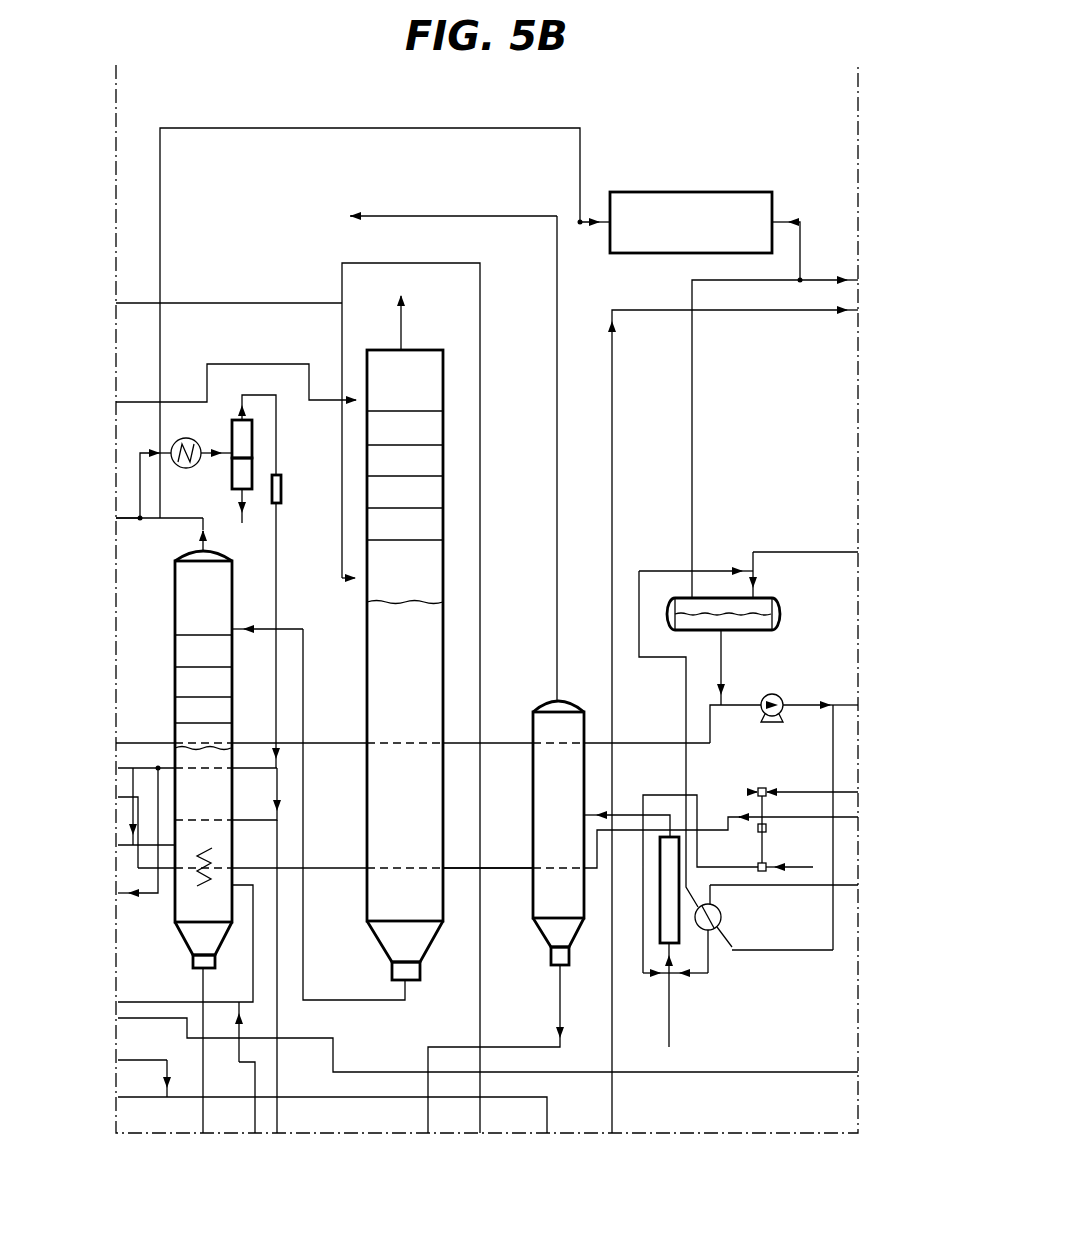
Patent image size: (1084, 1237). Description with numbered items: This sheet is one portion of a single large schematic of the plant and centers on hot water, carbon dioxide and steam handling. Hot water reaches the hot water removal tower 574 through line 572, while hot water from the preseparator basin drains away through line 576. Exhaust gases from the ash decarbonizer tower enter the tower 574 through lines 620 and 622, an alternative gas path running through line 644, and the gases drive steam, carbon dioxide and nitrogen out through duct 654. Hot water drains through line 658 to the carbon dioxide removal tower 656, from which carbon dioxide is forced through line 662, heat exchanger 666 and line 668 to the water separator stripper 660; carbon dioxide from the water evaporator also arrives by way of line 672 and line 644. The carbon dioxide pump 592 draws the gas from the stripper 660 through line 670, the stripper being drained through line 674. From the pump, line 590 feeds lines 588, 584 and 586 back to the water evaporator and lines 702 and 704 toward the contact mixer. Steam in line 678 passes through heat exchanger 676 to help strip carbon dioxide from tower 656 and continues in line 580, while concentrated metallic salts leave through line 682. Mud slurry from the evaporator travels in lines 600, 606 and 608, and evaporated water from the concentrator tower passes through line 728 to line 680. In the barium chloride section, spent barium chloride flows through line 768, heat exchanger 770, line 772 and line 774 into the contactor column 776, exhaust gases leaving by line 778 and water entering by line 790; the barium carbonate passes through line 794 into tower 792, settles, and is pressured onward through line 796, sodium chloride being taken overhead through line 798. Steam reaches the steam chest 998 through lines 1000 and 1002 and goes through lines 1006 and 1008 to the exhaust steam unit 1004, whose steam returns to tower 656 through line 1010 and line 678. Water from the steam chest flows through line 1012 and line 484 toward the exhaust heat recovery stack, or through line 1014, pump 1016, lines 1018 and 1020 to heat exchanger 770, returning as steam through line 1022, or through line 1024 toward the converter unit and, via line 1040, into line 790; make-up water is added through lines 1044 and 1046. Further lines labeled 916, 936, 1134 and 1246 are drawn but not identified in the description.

The line 484 is at (122, 766).
The line 572 is at (140, 402).
The hot water removal tower 574 is at (430, 340).
The line 576 is at (140, 303).
The line 580 is at (128, 848).
The line 584 is at (140, 896).
The line 586 is at (176, 735).
The line 588 is at (175, 700).
The line 590 is at (277, 560).
The carbon dioxide pump 592 is at (282, 492).
The line 600 is at (183, 1062).
The line 606 is at (147, 1088).
The line 608 is at (213, 1097).
The line 620 is at (343, 355).
The line 622 is at (342, 296).
The line 644 is at (135, 468).
The duct 654 is at (402, 318).
The carbon dioxide removal tower 656 is at (250, 590).
The line 658 is at (255, 618).
The water separator stripper 660 is at (221, 485).
The line 662 is at (200, 538).
The heat exchanger 666 is at (206, 430).
The line 668 is at (232, 462).
The line 670 is at (282, 392).
The line 672 is at (160, 518).
The line 674 is at (244, 505).
The heat exchanger 676 is at (213, 848).
The line 678 is at (143, 848).
The line 680 is at (182, 1000).
The line 682 is at (205, 1122).
The line 702 is at (278, 790).
The line 704 is at (278, 850).
The line 728 is at (243, 1028).
The line 768 is at (845, 886).
The heat exchanger 770 is at (721, 917).
The line 772 is at (708, 978).
The line 774 is at (680, 975).
The contactor column 776 is at (709, 980).
The line 778 is at (672, 1030).
The line 790 is at (750, 862).
The tower 792 is at (533, 833).
The line 794 is at (600, 812).
The line 796 is at (561, 1008).
The line 798 is at (440, 216).
The line 916 is at (848, 312).
The line 936 is at (850, 283).
The steam chest 998 is at (782, 612).
The line 1000 is at (845, 552).
The line 1002 is at (755, 590).
The exhaust steam unit 1004 is at (722, 192).
The line 1006 is at (790, 280).
The line 1008 is at (800, 276).
The line 1010 is at (588, 226).
The line 1012 is at (722, 668).
The line 1014 is at (733, 705).
The pump 1016 is at (833, 725).
The line 1018 is at (815, 695).
The line 1020 is at (833, 742).
The line 1022 is at (683, 568).
The line 1024 is at (782, 722).
The line 1040 is at (843, 790).
The line 1044 is at (748, 791).
The line 1046 is at (797, 860).
The line 1134 is at (120, 1020).
The line 1246 is at (138, 868).